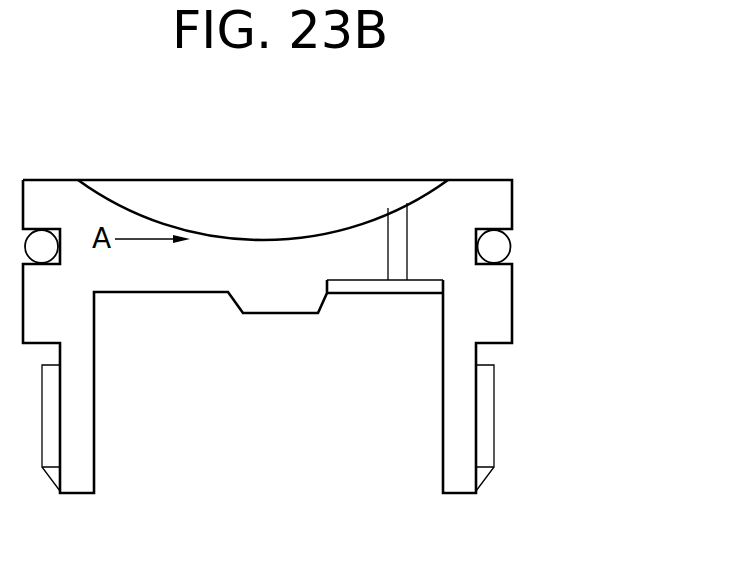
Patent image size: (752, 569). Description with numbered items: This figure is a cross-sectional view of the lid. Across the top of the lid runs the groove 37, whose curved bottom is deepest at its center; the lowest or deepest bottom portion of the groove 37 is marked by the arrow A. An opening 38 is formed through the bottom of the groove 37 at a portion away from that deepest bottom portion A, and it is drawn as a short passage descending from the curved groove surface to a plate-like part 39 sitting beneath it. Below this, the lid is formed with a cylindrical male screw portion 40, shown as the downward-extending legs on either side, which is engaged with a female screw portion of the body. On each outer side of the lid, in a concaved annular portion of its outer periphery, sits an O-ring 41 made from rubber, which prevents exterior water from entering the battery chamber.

The groove 37 is at (353, 197).
The opening 38 is at (398, 239).
The plate 39 is at (358, 293).
The cylindrical male screw portion 40 is at (485, 403).
The O-ring 41 is at (498, 246).